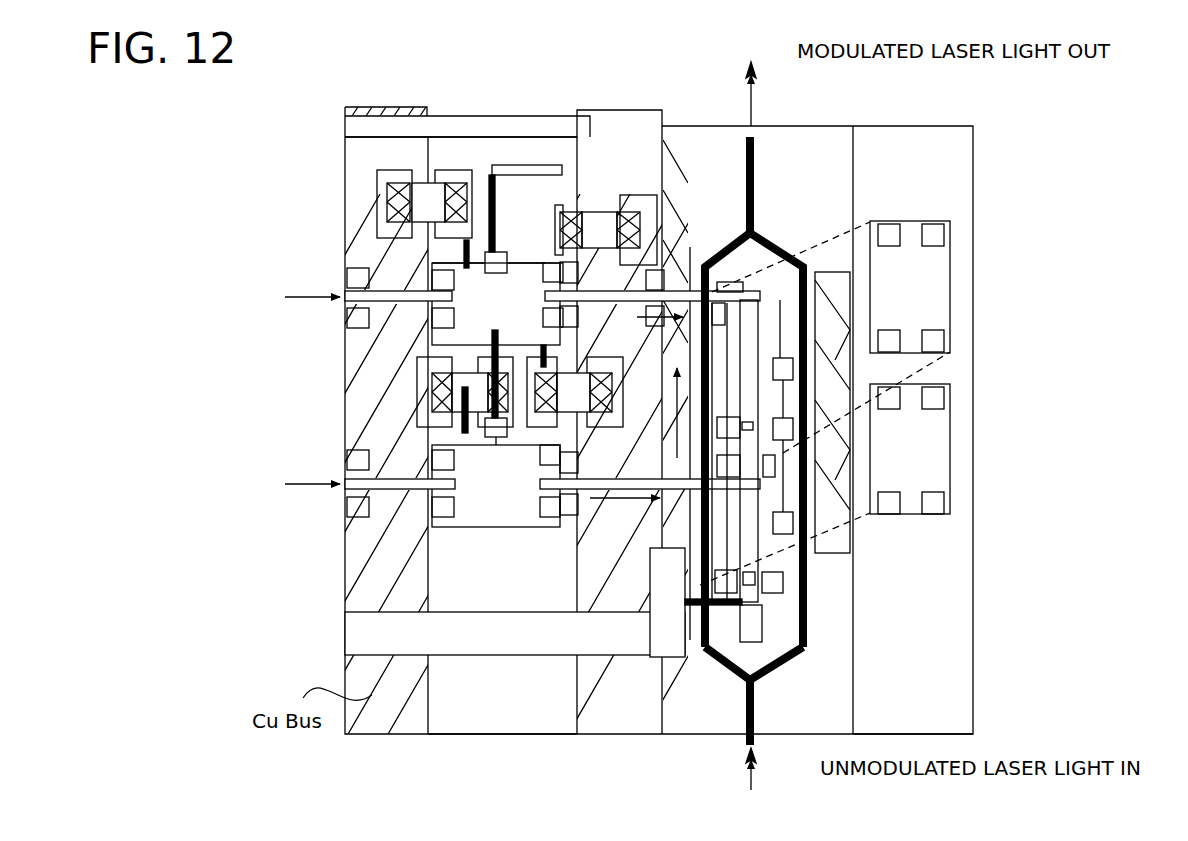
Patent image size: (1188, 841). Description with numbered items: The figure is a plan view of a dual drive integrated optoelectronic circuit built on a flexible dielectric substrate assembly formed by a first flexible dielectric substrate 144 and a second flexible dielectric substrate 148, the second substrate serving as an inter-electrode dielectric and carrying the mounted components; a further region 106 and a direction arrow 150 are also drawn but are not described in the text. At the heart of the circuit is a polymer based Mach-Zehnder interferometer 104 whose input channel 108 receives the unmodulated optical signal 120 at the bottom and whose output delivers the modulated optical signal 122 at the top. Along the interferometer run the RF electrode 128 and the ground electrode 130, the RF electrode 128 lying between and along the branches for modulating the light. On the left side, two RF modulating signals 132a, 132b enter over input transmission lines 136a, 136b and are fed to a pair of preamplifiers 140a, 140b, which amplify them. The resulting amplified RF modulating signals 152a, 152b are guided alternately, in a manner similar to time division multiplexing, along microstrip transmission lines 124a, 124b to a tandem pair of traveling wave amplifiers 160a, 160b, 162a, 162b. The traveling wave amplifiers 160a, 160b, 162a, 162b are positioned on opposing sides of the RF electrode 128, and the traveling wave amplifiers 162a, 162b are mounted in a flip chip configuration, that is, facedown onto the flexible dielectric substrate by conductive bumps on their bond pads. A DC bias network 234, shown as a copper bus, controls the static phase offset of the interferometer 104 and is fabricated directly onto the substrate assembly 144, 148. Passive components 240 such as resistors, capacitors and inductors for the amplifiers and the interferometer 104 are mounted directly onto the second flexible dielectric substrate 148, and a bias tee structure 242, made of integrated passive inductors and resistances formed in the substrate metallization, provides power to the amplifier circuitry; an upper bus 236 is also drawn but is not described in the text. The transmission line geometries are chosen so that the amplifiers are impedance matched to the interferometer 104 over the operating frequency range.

The Mach-Zehnder interferometer 104 is at (780, 217).
The substrate region 106 is at (705, 135).
The input channel 108 is at (758, 690).
The optical signal 120 is at (752, 785).
The modulated optical signal 122 is at (752, 95).
The microstrip transmission line 124a is at (655, 285).
The microstrip transmission line 124b is at (605, 518).
The RF electrode 128 is at (752, 605).
The ground electrode 130 is at (745, 487).
The RF modulating signal 132a is at (494, 307).
The RF modulating signal 132b is at (494, 489).
The transmission line 136a is at (402, 318).
The transmission line 136b is at (408, 498).
The preamplifier 140a is at (463, 323).
The preamplifier 140b is at (497, 517).
The first flexible dielectric substrate 144 is at (512, 700).
The second flexible dielectric substrate 148 is at (955, 670).
The signal direction arrow 150 is at (672, 395).
The amplified RF modulating signal 152a is at (672, 318).
The amplified RF modulating signal 152b is at (632, 495).
The traveling wave amplifier 160a is at (808, 315).
The traveling wave amplifier 160b is at (660, 545).
The traveling wave amplifier 162a is at (943, 276).
The traveling wave amplifier 162b is at (920, 440).
The DC bias network 234 is at (370, 638).
The top bus bar 236 is at (357, 123).
The passive components 240 is at (420, 193).
The bias tee structure 242 is at (537, 165).